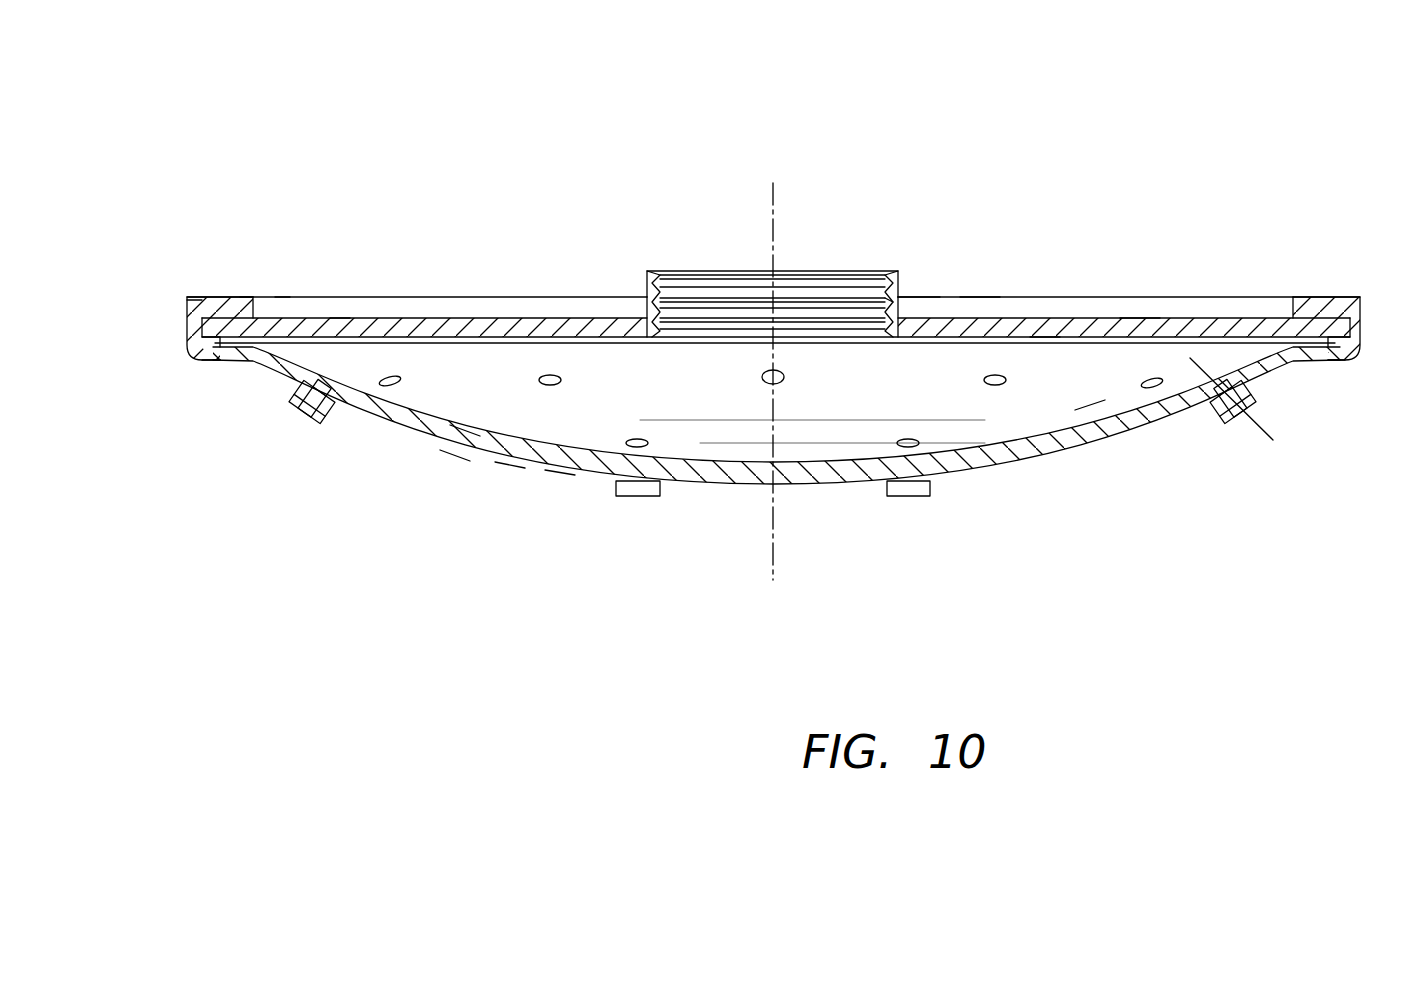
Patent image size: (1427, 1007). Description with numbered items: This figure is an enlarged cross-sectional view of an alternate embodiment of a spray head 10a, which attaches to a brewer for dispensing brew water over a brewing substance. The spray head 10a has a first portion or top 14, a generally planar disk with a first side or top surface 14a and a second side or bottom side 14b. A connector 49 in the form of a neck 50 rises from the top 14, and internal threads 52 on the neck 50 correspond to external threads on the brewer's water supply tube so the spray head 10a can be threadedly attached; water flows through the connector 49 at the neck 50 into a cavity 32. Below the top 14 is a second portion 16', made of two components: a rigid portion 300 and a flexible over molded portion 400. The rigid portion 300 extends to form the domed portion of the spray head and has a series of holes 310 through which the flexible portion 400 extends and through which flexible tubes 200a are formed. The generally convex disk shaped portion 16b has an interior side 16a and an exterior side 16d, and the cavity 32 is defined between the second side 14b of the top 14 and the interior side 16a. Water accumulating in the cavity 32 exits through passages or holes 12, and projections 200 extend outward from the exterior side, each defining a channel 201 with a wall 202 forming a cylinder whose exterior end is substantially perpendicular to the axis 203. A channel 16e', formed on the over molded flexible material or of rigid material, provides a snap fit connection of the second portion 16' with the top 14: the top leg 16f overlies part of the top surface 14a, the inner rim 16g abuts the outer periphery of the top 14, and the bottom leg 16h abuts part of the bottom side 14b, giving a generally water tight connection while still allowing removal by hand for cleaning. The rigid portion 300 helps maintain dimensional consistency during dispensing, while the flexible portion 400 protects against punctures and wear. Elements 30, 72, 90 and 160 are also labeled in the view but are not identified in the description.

The spray head 10a is at (1236, 173).
The passages or holes 12 is at (997, 385).
The first portion or top 14 is at (1084, 308).
The first side or top surface 14a is at (1138, 316).
The second side or bottom side 14b is at (1050, 348).
The second portion 16' is at (581, 533).
The interior side 16a is at (465, 426).
The generally convex disk shaped portion 16b is at (457, 453).
The exterior side 16d is at (508, 463).
The channel 16e' is at (162, 263).
The top leg 16f is at (250, 306).
The inner rim 16g is at (1336, 322).
The bottom leg 16h is at (227, 348).
The joint 30 is at (1332, 347).
The cavity 32 is at (663, 401).
The connector 49 is at (646, 281).
The neck 50 is at (915, 297).
The internal threads 52 is at (893, 305).
The rim cap 72 is at (195, 300).
The gap 90 is at (289, 303).
The plate portion 160 is at (977, 316).
The projections 200 is at (933, 490).
The flexible tubes 200a is at (1220, 428).
The channel 201 is at (300, 410).
The wall 202 is at (293, 375).
The axis 203 is at (1277, 432).
The rigid portion 300 is at (770, 205).
The holes 310 is at (323, 376).
The flexible over molded portion 400 is at (1130, 425).